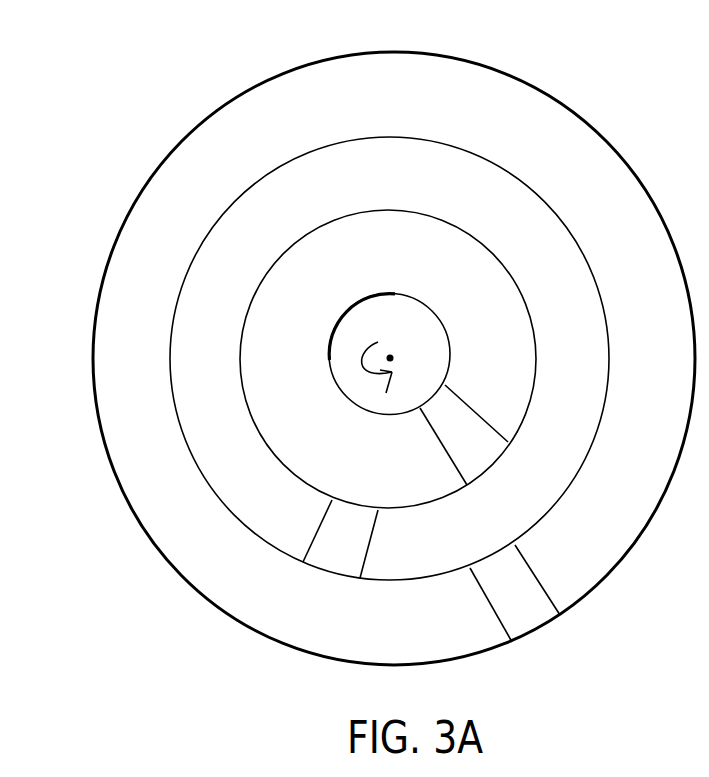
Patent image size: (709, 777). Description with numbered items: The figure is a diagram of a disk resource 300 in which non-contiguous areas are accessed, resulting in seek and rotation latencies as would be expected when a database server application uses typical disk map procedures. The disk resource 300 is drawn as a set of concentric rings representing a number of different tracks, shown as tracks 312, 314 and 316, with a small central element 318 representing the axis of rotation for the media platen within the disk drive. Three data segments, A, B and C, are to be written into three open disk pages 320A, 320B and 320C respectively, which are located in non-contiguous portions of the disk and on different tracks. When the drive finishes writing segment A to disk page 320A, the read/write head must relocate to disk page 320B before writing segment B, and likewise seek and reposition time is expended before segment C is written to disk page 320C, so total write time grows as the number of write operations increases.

The disk resource 300 is at (500, 42).
The track 312 is at (388, 98).
The track 314 is at (388, 188).
The track 316 is at (389, 274).
The axis of rotation 318 is at (390, 358).
The disk page 320A is at (513, 576).
The disk page 320B is at (360, 538).
The disk page 320C is at (453, 405).